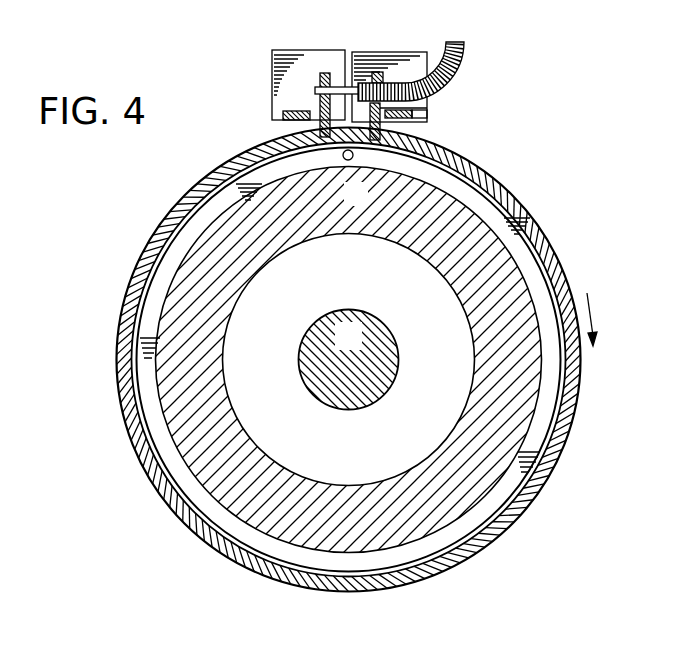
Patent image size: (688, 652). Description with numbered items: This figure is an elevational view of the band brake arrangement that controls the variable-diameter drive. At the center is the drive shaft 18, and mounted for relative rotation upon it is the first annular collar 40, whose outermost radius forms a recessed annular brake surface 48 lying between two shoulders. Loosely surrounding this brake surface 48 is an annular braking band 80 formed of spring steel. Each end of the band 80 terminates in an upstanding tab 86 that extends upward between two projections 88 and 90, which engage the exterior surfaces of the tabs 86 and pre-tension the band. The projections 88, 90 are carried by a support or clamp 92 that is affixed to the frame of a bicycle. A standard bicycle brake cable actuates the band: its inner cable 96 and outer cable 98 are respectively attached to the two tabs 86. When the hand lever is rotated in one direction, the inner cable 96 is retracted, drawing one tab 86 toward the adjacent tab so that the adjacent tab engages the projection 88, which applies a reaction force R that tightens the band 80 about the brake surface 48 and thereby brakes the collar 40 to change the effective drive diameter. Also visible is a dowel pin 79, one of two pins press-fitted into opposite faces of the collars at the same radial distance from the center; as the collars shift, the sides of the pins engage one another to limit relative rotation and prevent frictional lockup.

The drive shaft 18 is at (340, 348).
The first annular collar 40 is at (465, 248).
The recessed annular brake surface 48 is at (490, 183).
The dowel pin 79 is at (349, 161).
The annular braking band 80 is at (137, 264).
The upstanding tab 86 is at (302, 128).
The projection 88 is at (418, 108).
The projection 90 is at (290, 112).
The support or clamp 92 is at (378, 51).
The inner cable 96 is at (326, 73).
The outer cable 98 is at (466, 45).
The reaction force R is at (413, 117).